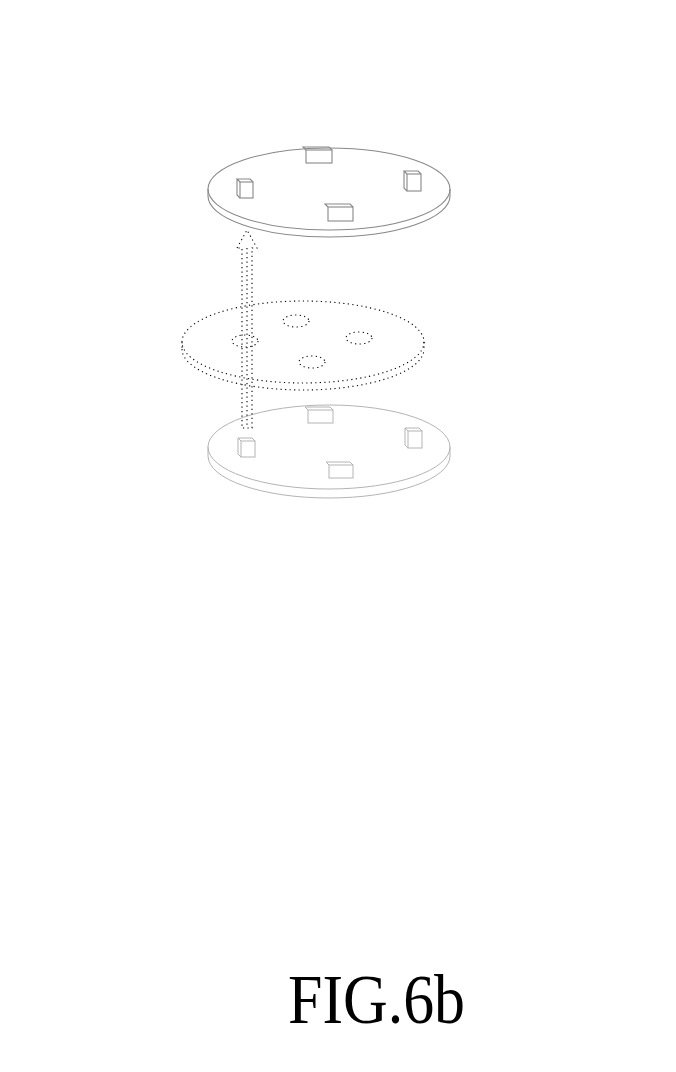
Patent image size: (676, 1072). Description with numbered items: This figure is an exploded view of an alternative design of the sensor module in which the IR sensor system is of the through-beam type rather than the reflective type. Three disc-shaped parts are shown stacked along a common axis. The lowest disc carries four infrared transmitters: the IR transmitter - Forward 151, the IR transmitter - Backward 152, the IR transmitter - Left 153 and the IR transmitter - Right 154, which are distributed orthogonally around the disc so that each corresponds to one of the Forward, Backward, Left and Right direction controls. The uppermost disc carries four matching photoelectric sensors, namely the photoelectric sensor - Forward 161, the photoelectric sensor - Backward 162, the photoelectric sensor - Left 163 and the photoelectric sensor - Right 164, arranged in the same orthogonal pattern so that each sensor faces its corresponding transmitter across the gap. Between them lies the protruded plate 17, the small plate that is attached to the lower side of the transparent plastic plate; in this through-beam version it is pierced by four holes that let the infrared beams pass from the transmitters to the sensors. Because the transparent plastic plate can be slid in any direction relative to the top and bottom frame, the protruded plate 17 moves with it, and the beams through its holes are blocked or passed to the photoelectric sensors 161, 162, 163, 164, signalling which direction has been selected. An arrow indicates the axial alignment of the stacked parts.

The protruded plate 17 is at (233, 338).
The IR transmitter - Forward 151 is at (318, 420).
The IR transmitter - Backward 152 is at (340, 477).
The IR transmitter - Left 153 is at (243, 450).
The IR transmitter - Right 154 is at (417, 447).
The photoelectric sensor - Forward 161 is at (312, 151).
The photoelectric sensor - Backward 162 is at (349, 207).
The photoelectric sensor - Left 163 is at (241, 182).
The photoelectric sensor - Right 164 is at (415, 175).